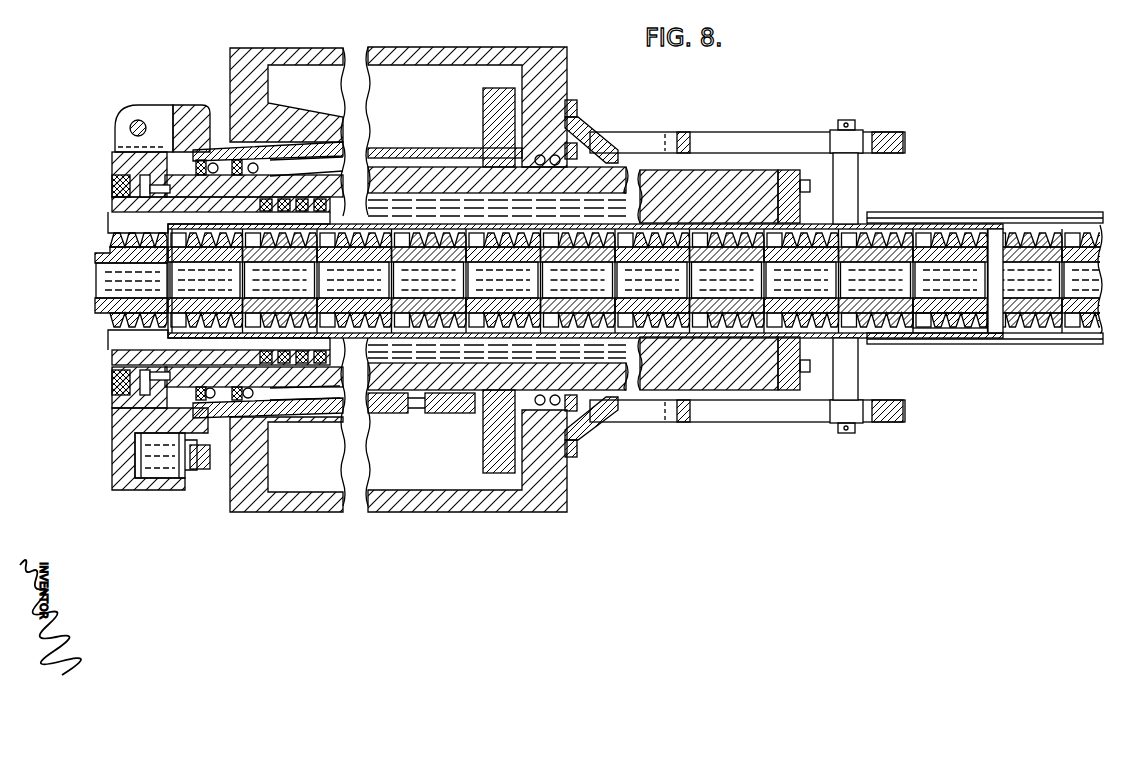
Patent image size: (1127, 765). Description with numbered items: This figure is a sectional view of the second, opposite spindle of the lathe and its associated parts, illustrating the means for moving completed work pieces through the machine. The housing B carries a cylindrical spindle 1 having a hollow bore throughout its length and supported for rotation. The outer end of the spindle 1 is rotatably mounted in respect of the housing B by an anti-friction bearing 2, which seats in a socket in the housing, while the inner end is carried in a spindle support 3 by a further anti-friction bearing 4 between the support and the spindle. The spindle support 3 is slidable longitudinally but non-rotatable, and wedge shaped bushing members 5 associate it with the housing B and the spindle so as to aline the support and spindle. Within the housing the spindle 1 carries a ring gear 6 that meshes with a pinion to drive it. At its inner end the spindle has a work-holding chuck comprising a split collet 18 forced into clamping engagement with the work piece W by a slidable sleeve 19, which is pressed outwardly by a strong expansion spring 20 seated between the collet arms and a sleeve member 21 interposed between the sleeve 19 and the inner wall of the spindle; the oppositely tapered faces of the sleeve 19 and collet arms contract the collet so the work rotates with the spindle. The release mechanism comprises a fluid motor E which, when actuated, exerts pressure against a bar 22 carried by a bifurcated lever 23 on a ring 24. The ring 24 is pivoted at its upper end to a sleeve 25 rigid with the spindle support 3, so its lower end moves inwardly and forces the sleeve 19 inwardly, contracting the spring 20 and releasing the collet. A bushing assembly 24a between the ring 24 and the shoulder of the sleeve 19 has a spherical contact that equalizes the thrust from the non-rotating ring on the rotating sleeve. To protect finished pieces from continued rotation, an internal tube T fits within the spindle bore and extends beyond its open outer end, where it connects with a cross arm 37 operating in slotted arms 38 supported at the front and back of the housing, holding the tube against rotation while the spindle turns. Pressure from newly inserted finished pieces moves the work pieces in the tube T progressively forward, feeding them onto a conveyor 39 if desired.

The spindle 1 is at (715, 170).
The anti-friction bearing 2 is at (550, 403).
The spindle support 3 is at (382, 413).
The anti-friction bearing 4 is at (263, 422).
The wedge shaped bushing members 5 is at (427, 413).
The ring gear 6 is at (483, 117).
The split collet 18 is at (107, 220).
The slidable sleeve 19 is at (110, 203).
The expansion spring 20 is at (308, 186).
The sleeve member 21 is at (117, 155).
The bar 22 is at (202, 472).
The bifurcated lever 23 is at (197, 467).
The ring 24 is at (110, 158).
The bushing assembly 24a is at (113, 183).
The sleeve 25 is at (182, 105).
The cross arm 37 is at (852, 187).
The slotted arms 38 is at (775, 132).
The conveyor 39 is at (1033, 212).
The housing B is at (288, 512).
The fluid motor E is at (163, 473).
The internal tube T is at (977, 332).
The workpiece W is at (90, 312).